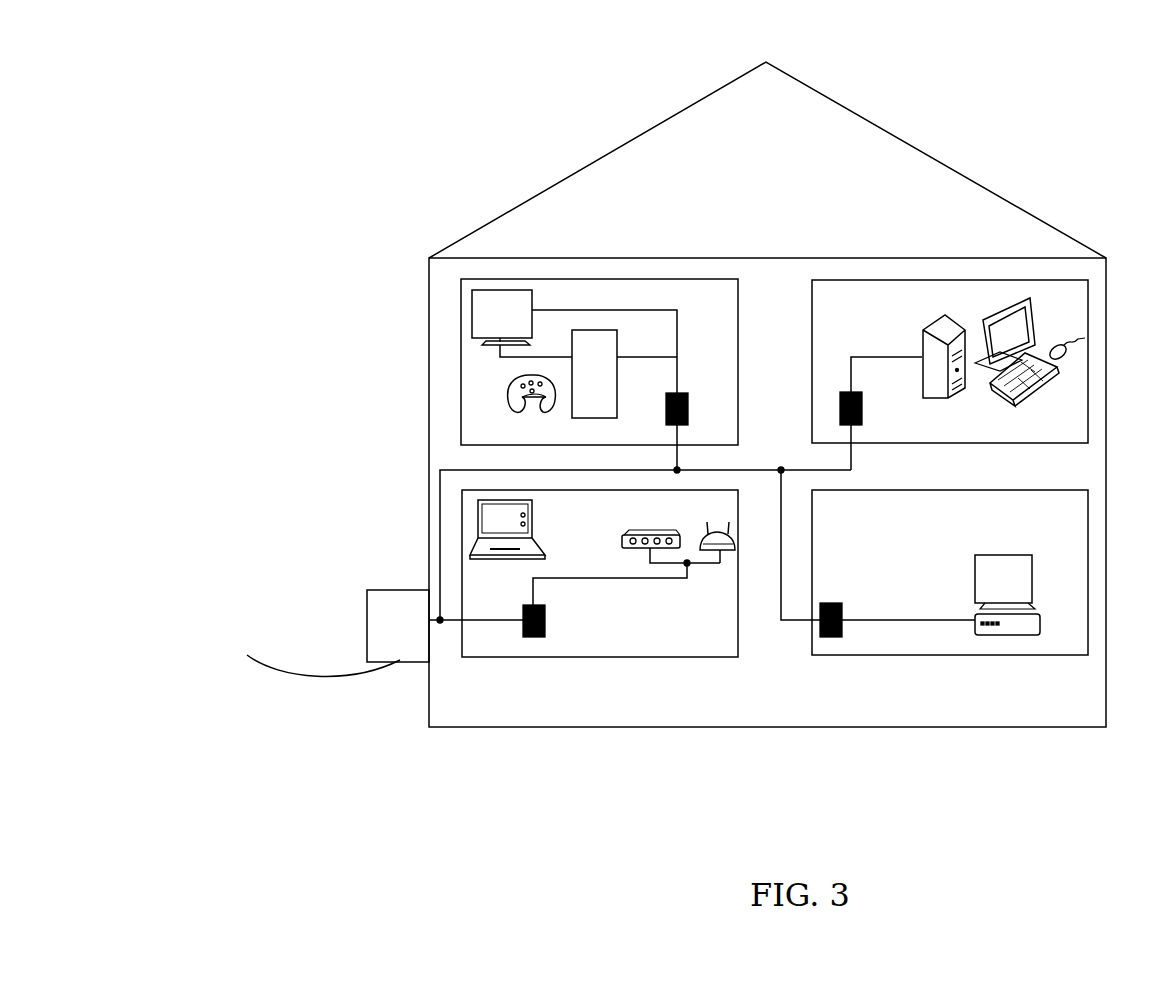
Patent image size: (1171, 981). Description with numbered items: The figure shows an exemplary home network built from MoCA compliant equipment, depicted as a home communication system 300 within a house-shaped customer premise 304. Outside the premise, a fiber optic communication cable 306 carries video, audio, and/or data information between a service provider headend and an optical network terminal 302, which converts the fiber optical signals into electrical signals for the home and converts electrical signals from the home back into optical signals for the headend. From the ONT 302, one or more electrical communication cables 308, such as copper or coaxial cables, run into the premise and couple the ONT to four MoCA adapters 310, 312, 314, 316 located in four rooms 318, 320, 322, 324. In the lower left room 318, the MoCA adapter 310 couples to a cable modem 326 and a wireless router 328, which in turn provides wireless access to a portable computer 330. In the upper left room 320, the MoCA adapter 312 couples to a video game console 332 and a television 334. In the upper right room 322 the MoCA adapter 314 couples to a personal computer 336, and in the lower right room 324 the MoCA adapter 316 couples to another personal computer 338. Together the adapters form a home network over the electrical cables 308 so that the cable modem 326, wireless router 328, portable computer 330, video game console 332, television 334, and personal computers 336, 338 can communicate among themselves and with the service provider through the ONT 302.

The home communication system 300 is at (1146, 116).
The optical network terminal 302 is at (395, 590).
The customer premise 304 is at (876, 125).
The fiber optic communication cable 306 is at (272, 663).
The electrical communication cables 308 is at (440, 471).
The MoCA adapter 310 is at (546, 625).
The MoCA adapter 312 is at (689, 408).
The MoCA adapter 314 is at (863, 418).
The MoCA adapter 316 is at (830, 603).
The room 318 is at (672, 658).
The room 320 is at (692, 258).
The room 322 is at (990, 258).
The room 324 is at (1030, 656).
The cable modem 326 is at (622, 533).
The wireless router 328 is at (722, 554).
The portable computer 330 is at (546, 553).
The video game console 332 is at (588, 374).
The television 334 is at (502, 317).
The personal computer 336 is at (922, 333).
The personal computer 338 is at (975, 570).